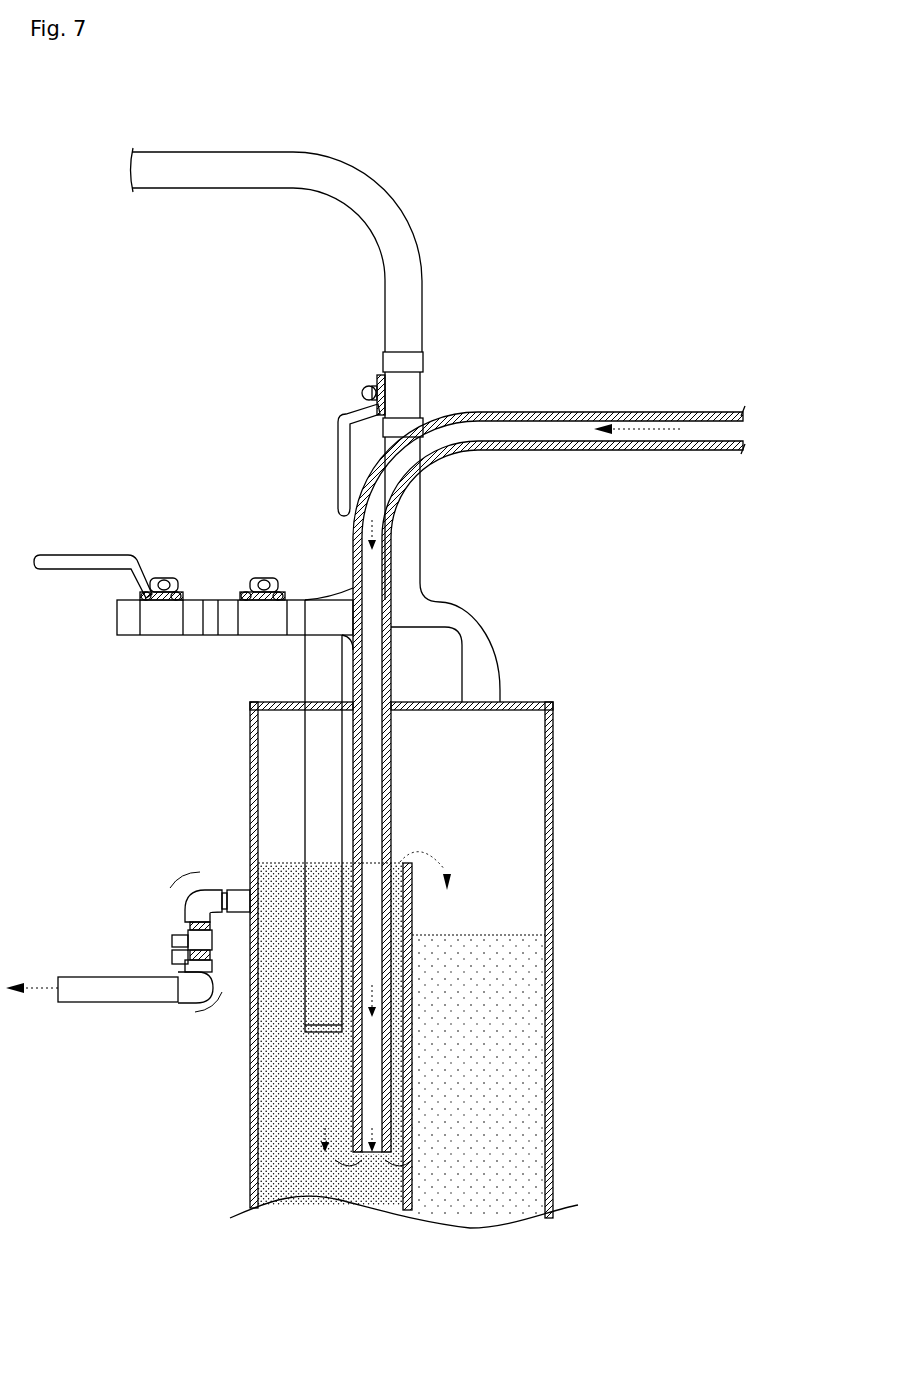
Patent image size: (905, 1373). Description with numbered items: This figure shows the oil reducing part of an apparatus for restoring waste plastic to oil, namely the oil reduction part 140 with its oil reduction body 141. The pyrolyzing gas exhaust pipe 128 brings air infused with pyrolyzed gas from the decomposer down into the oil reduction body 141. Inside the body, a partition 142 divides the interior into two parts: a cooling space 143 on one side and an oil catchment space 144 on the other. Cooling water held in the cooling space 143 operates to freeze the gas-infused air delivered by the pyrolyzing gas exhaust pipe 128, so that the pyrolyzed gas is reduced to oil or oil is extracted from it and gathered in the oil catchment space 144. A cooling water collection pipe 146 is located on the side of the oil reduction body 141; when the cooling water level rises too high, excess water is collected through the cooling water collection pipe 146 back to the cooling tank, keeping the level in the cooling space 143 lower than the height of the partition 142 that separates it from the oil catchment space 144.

The oil reduction part 140 is at (188, 462).
The pyrolyzing gas exhaust pipe 128 is at (553, 449).
The oil reduction body 141 is at (252, 775).
The partition wall 142 is at (415, 1008).
The cooling space 143 is at (310, 1098).
The oil catchment space 144 is at (490, 1090).
The cooling water collection pipe 146 is at (135, 990).